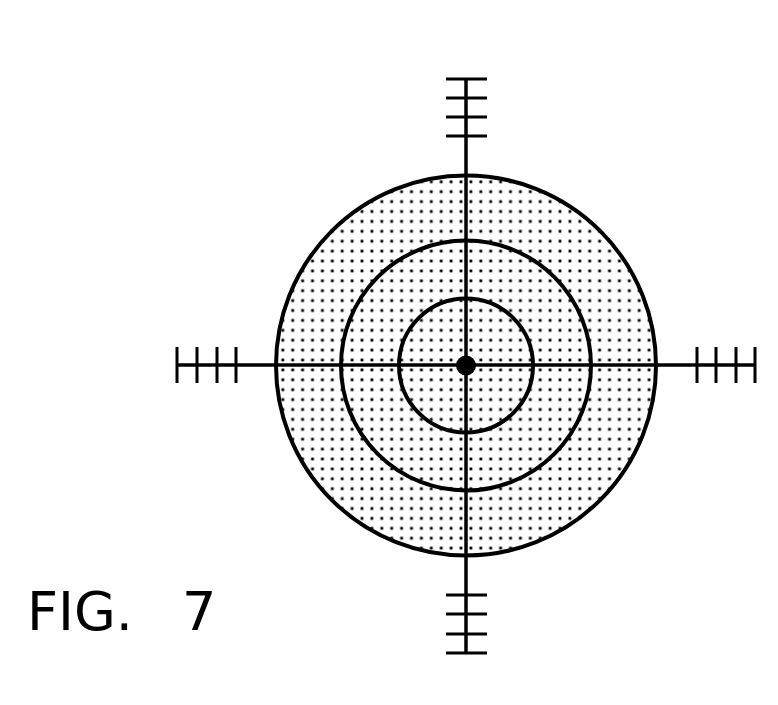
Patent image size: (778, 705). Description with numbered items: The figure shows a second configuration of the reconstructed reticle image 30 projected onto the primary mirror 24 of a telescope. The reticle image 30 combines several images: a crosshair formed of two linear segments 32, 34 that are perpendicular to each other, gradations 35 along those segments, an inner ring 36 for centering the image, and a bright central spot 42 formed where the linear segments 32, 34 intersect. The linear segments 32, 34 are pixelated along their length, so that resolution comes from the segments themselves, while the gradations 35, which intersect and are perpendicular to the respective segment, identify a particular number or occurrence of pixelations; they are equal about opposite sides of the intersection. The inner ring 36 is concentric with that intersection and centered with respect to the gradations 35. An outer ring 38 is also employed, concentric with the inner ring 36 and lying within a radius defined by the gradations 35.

The primary mirror 24 is at (383, 538).
The reticle image 30 is at (448, 335).
The linear segment 32 is at (465, 155).
The linear segment 34 is at (678, 368).
The gradations 35 is at (478, 117).
The inner ring 36 is at (508, 420).
The outer ring 38 is at (530, 257).
The bright central spot 42 is at (470, 360).